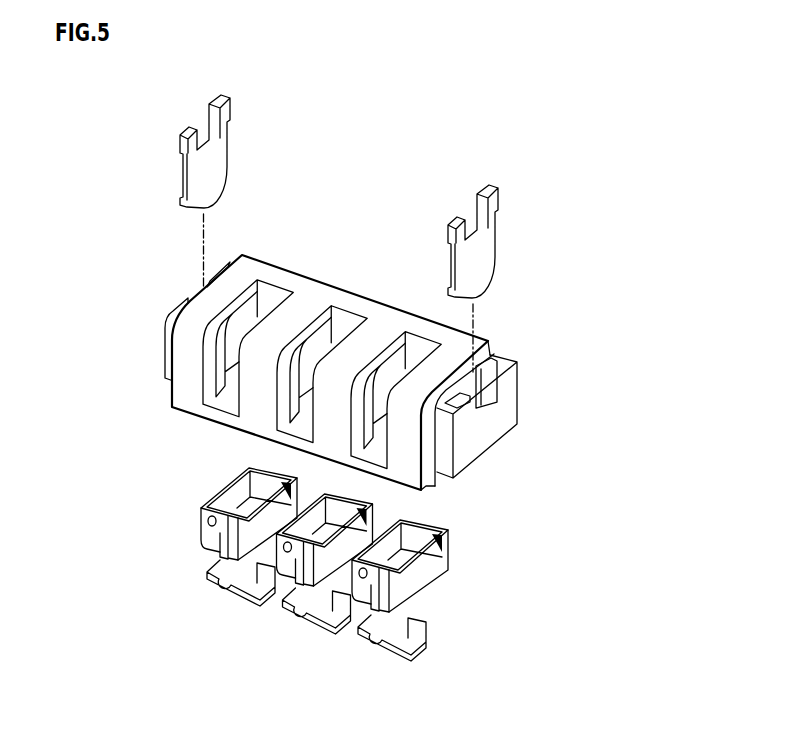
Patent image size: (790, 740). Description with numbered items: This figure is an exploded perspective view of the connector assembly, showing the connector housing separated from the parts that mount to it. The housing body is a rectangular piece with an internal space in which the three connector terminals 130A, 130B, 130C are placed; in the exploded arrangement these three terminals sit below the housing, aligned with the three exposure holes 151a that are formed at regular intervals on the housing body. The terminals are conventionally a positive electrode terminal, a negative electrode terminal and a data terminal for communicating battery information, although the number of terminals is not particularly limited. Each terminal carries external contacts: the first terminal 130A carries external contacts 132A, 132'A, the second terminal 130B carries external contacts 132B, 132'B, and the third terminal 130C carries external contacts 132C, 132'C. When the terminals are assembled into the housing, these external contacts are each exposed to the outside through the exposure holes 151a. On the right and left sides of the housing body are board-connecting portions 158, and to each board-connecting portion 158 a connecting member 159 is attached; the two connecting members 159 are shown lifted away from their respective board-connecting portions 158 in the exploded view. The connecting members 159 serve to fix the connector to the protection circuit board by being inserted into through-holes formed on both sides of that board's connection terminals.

The connector terminal 130A is at (202, 580).
The connector terminal 130B is at (308, 626).
The connector terminal 130C is at (384, 648).
The external contact 132A is at (207, 520).
The external contact 132B is at (283, 551).
The external contact 132C is at (368, 571).
The external contact 132'A is at (168, 540).
The external contact 132'B is at (248, 604).
The external contact 132'C is at (454, 590).
The exposure hole 151a is at (232, 392).
The board-connecting portion 158 is at (167, 339).
The connecting member 159 is at (181, 130).